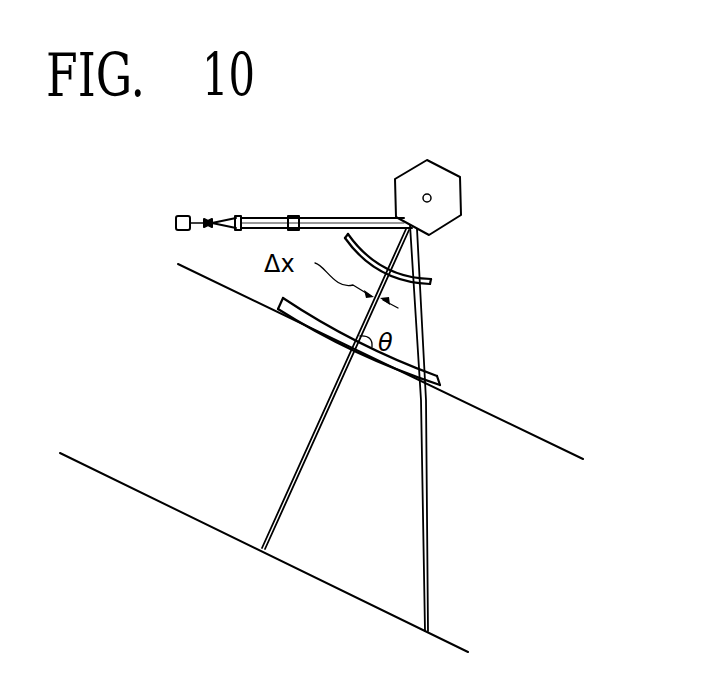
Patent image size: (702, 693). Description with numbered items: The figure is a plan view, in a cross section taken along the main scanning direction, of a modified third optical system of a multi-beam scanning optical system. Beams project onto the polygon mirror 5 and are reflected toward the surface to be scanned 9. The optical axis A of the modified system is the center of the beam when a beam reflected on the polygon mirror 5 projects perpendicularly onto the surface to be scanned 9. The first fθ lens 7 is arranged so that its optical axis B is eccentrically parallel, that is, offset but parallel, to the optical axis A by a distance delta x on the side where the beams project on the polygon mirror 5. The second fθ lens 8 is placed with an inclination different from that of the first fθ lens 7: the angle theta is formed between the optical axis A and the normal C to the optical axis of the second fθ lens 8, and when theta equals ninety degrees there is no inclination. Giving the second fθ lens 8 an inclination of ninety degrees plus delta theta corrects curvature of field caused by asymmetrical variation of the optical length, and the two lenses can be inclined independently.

The polygon mirror 5 is at (461, 180).
The first fθ lens 7 is at (432, 281).
The second fθ lens 8 is at (432, 378).
The surface to be scanned 9 is at (442, 637).
The optical axis of the modified optical system A is at (400, 256).
The optical axis of the first fθ lens B is at (396, 250).
The normal to the optical axis of the second fθ lens C is at (527, 430).